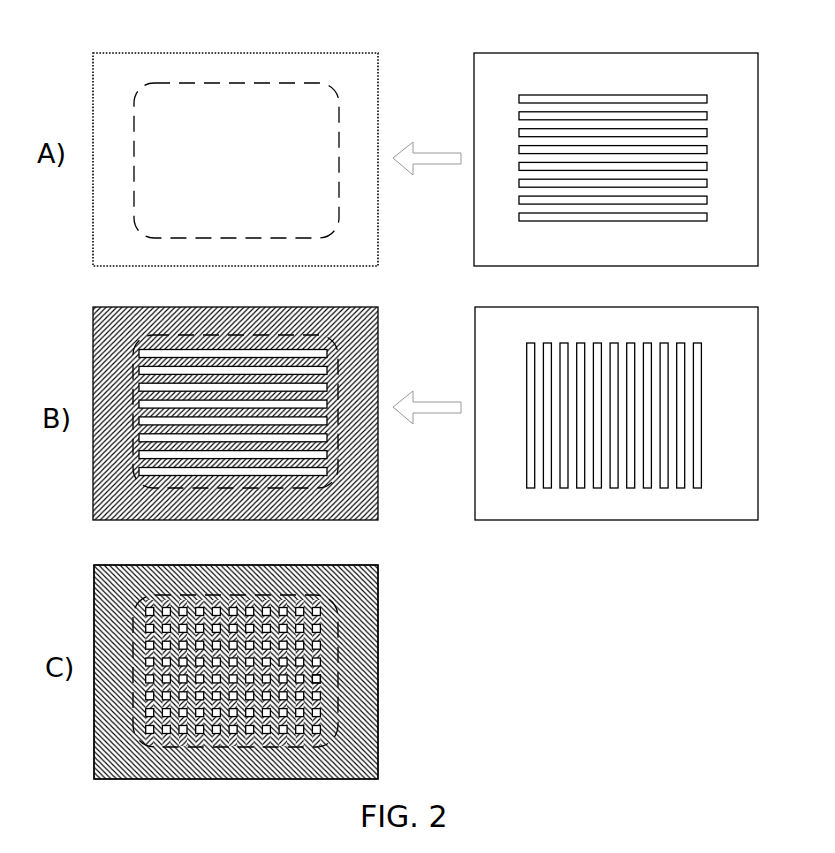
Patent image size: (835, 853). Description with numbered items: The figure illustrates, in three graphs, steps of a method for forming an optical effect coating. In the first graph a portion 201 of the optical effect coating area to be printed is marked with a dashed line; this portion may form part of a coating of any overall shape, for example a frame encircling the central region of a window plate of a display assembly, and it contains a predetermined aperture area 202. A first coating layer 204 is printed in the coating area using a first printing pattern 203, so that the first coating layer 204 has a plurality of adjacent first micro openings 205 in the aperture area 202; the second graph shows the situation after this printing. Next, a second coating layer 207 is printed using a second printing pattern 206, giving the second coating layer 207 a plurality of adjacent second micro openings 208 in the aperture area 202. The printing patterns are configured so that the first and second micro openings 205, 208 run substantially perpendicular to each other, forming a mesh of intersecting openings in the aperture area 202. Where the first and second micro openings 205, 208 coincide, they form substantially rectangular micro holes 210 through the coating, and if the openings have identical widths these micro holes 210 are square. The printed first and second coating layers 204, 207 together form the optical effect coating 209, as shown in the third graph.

The portion of optical effect coating area 201 is at (93, 112).
The aperture area 202 is at (135, 191).
The first printing pattern 203 is at (474, 112).
The first coating layer 204 is at (113, 338).
The first micro openings 205 is at (687, 117).
The second printing pattern 206 is at (475, 352).
The second coating layer 207 is at (100, 580).
The second micro openings 208 is at (698, 373).
The optical effect coating 209 is at (387, 647).
The micro holes 210 is at (318, 678).